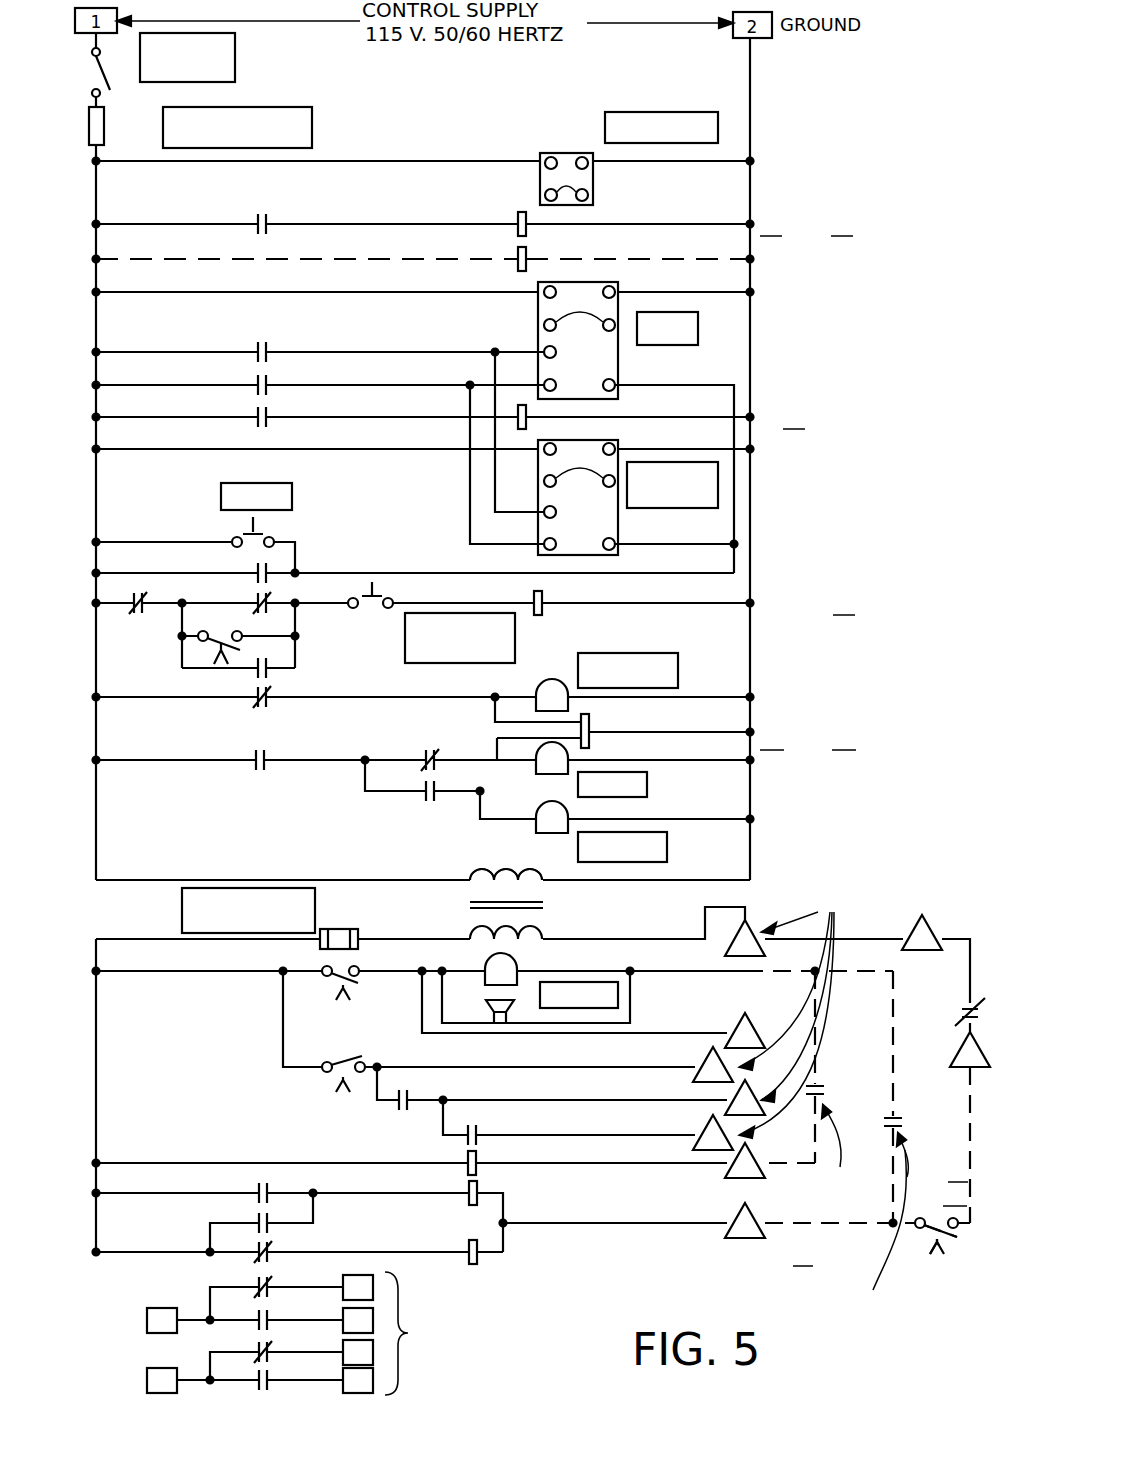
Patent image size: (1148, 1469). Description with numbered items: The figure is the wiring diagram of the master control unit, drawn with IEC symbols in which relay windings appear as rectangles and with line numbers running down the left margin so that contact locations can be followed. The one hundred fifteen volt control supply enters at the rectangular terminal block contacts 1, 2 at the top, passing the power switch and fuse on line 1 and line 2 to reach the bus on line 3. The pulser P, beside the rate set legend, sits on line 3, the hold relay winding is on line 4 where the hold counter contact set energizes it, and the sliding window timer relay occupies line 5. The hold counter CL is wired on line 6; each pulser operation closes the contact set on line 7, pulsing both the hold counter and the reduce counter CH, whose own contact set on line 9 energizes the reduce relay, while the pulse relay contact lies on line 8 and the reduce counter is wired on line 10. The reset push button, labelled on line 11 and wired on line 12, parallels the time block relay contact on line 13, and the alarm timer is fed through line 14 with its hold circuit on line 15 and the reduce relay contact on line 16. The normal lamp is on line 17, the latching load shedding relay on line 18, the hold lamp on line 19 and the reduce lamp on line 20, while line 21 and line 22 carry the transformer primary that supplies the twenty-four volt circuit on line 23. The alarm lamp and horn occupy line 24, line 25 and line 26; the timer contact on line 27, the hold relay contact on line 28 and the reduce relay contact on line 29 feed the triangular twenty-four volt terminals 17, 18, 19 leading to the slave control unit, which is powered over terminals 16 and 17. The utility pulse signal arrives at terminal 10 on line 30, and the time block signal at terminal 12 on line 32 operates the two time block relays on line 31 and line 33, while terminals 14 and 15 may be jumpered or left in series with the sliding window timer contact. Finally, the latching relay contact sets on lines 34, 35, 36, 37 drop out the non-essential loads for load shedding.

The terminal block contact 1 is at (152, 70).
The terminal block contact 2 is at (190, 130).
The line 3 is at (424, 158).
The line 4 is at (487, 217).
The line 5 is at (431, 257).
The line 6 is at (424, 332).
The line 7 is at (309, 421).
The line 8 is at (404, 468).
The line 9 is at (487, 413).
The terminal 10 is at (419, 489).
The line 11 is at (177, 495).
The terminal 12 is at (181, 546).
The line 13 is at (398, 569).
The line 14 is at (463, 622).
The line 15 is at (181, 635).
The terminal 16 is at (179, 675).
The terminal 17 is at (408, 682).
The terminal 18 is at (481, 728).
The terminal 19 is at (408, 765).
The line 20 is at (408, 796).
The line 21 is at (365, 847).
The line 22 is at (484, 903).
The line 23 is at (526, 977).
The line 24 is at (516, 1088).
The line 25 is at (346, 997).
The line 26 is at (414, 1009).
The line 27 is at (446, 1002).
The line 28 is at (447, 1013).
The line 29 is at (448, 1031).
The line 30 is at (486, 1158).
The line 31 is at (283, 1211).
The line 32 is at (516, 1243).
The line 33 is at (283, 1258).
The line 34 is at (218, 1297).
The line 35 is at (218, 1326).
The line 36 is at (218, 1360).
The line 37 is at (283, 1338).